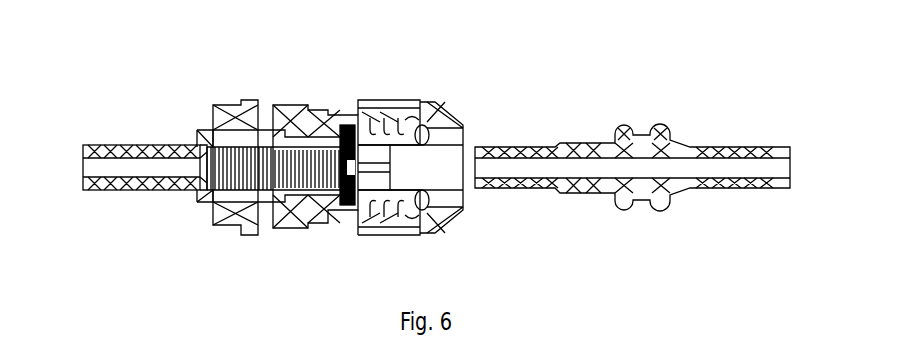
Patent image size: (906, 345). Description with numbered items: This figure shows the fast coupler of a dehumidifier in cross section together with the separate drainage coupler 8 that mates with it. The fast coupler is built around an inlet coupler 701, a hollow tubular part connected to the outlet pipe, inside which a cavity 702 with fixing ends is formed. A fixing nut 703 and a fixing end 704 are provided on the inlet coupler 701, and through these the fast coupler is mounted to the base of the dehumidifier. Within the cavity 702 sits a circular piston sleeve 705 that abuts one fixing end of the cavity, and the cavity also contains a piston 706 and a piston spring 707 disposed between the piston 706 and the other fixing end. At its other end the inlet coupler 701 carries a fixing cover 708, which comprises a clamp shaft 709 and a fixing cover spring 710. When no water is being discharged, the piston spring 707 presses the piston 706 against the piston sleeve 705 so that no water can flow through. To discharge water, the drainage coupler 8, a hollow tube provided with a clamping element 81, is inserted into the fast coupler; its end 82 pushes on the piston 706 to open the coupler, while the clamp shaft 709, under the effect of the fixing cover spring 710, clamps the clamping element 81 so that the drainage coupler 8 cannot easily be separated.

The inlet coupler 701 is at (167, 145).
The cavity 702 is at (192, 175).
The fixing nut 703 is at (243, 105).
The fixing end 704 is at (285, 105).
The piston sleeve 705 is at (354, 207).
The piston 706 is at (345, 195).
The piston spring 707 is at (213, 205).
The fixing cover 708 is at (367, 100).
The clamp shaft 709 is at (420, 120).
The fixing cover spring 710 is at (412, 207).
The drainage coupler 8 is at (727, 192).
The clamping element 81 is at (567, 147).
The end 82 is at (480, 147).